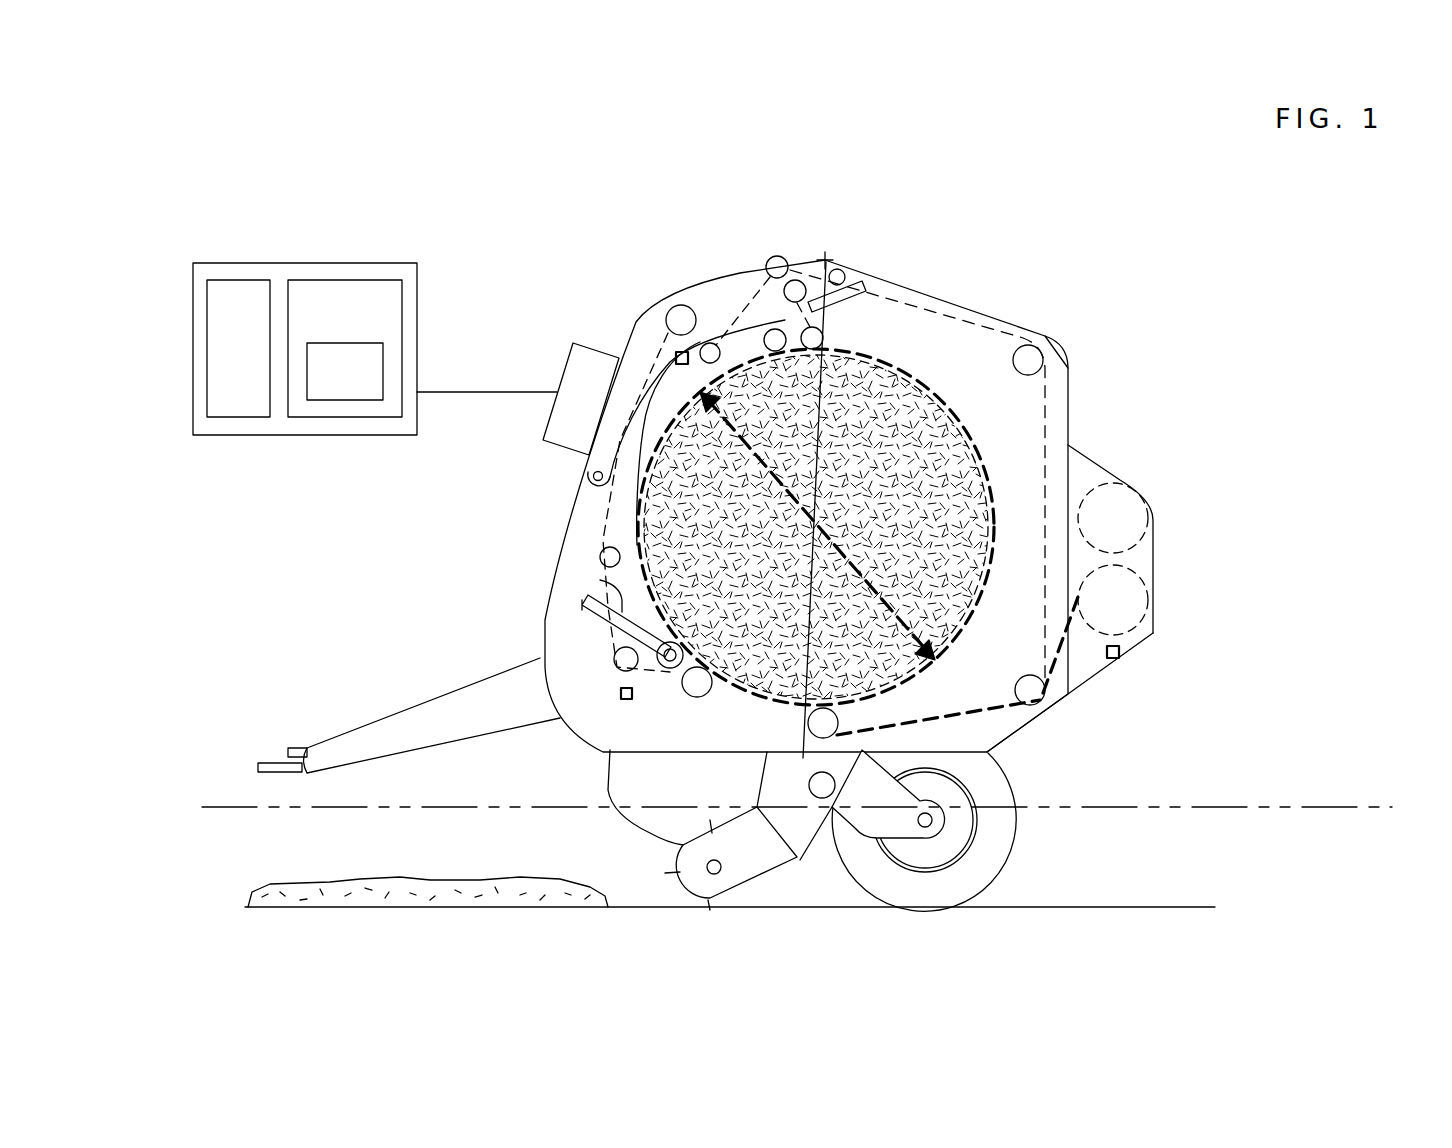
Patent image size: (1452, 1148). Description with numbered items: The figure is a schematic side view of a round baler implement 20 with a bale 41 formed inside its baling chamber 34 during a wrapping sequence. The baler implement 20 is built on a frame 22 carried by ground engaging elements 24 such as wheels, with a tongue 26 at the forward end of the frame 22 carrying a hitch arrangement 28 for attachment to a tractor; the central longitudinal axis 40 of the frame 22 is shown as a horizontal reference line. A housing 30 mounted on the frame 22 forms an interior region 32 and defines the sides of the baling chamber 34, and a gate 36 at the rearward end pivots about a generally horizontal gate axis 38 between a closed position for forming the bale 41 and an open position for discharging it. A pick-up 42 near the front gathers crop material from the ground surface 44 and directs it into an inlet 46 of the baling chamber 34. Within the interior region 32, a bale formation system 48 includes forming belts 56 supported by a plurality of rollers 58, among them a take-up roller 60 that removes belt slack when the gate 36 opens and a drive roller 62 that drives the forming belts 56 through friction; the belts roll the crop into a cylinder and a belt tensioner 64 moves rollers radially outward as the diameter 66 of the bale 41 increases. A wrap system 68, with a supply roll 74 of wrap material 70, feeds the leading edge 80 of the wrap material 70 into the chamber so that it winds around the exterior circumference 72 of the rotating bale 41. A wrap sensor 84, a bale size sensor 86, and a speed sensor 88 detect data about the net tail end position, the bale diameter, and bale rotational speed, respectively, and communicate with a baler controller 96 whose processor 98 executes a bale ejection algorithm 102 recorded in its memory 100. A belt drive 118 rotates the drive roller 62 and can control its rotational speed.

The baler implement 20 is at (970, 103).
The frame 22 is at (870, 815).
The ground engaging elements 24 is at (983, 868).
The tongue 26 is at (400, 727).
The hitch arrangement 28 is at (272, 757).
The housing 30 is at (540, 610).
The interior region 32 is at (930, 345).
The baling chamber 34 is at (982, 472).
The gate 36 is at (993, 307).
The gate axis 38 is at (830, 261).
The central longitudinal axis 40 is at (240, 808).
The bale 41 is at (913, 440).
The pick-up 42 is at (690, 887).
The ground surface 44 is at (1197, 907).
The inlet 46 is at (730, 697).
The bale formation system 48 is at (597, 538).
The forming belts 56 is at (1045, 430).
The rollers 58 is at (677, 305).
The take-up roller 60 is at (845, 272).
The drive roller 62 is at (613, 655).
The belt tensioner 64 is at (730, 335).
The diameter 66 is at (735, 437).
The wrap system 68 is at (1153, 552).
The wrap material 70 is at (1067, 670).
The exterior circumference 72 is at (998, 537).
The supply roll 74 is at (1130, 610).
The leading edge 80 is at (810, 707).
The wrap sensor 84 is at (1120, 658).
The bale size sensor 86 is at (675, 360).
The speed sensor 88 is at (620, 693).
The baler controller 96 is at (258, 262).
The processor 98 is at (238, 348).
The memory 100 is at (345, 348).
The bale ejection algorithm 102 is at (345, 371).
The belt drive 118 is at (603, 587).